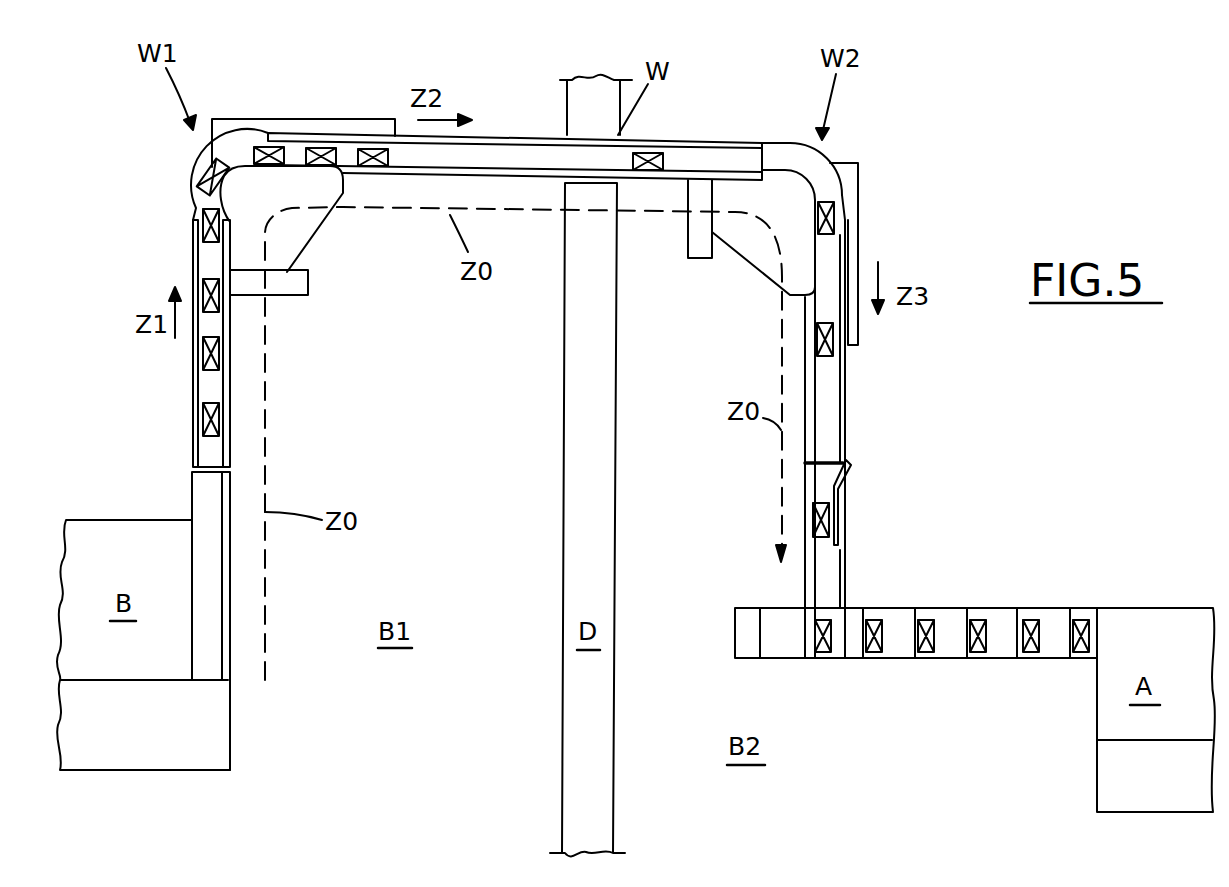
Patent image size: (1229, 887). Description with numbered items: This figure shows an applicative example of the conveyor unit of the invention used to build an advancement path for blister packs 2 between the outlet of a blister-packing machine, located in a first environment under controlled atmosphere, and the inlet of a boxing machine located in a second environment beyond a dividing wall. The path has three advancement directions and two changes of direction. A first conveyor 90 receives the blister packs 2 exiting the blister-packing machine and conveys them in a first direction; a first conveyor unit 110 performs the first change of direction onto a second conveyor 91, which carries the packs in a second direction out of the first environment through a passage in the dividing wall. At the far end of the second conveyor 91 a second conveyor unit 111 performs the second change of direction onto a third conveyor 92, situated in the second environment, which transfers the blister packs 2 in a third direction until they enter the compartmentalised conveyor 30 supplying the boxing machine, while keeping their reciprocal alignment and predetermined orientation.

The blister packs 2 is at (202, 425).
The compartmentalised conveyor 30 is at (948, 663).
The first conveyor 90 is at (195, 275).
The second conveyor 91 is at (528, 138).
The third conveyor 92 is at (843, 432).
The first conveyor unit 110 is at (170, 168).
The second conveyor unit 111 is at (884, 163).